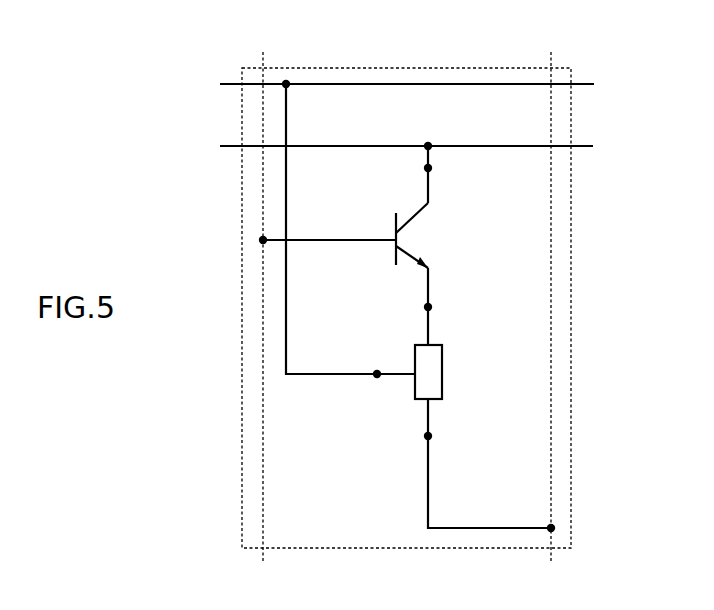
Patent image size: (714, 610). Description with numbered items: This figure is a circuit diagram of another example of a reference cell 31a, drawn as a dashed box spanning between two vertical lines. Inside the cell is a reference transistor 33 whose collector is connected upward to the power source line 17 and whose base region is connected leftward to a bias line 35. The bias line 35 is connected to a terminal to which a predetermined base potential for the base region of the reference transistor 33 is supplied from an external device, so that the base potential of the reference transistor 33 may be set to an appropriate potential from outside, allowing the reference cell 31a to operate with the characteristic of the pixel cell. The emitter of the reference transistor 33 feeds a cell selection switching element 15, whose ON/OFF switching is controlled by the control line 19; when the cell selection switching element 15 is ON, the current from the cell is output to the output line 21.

The reference cell 31a is at (467, 66).
The bias line 35 is at (262, 342).
The output line 21 is at (553, 338).
The control line 19 is at (318, 82).
The power source line 17 is at (366, 144).
The reference transistor 33 is at (422, 240).
The cell selection switching element 15 is at (443, 365).